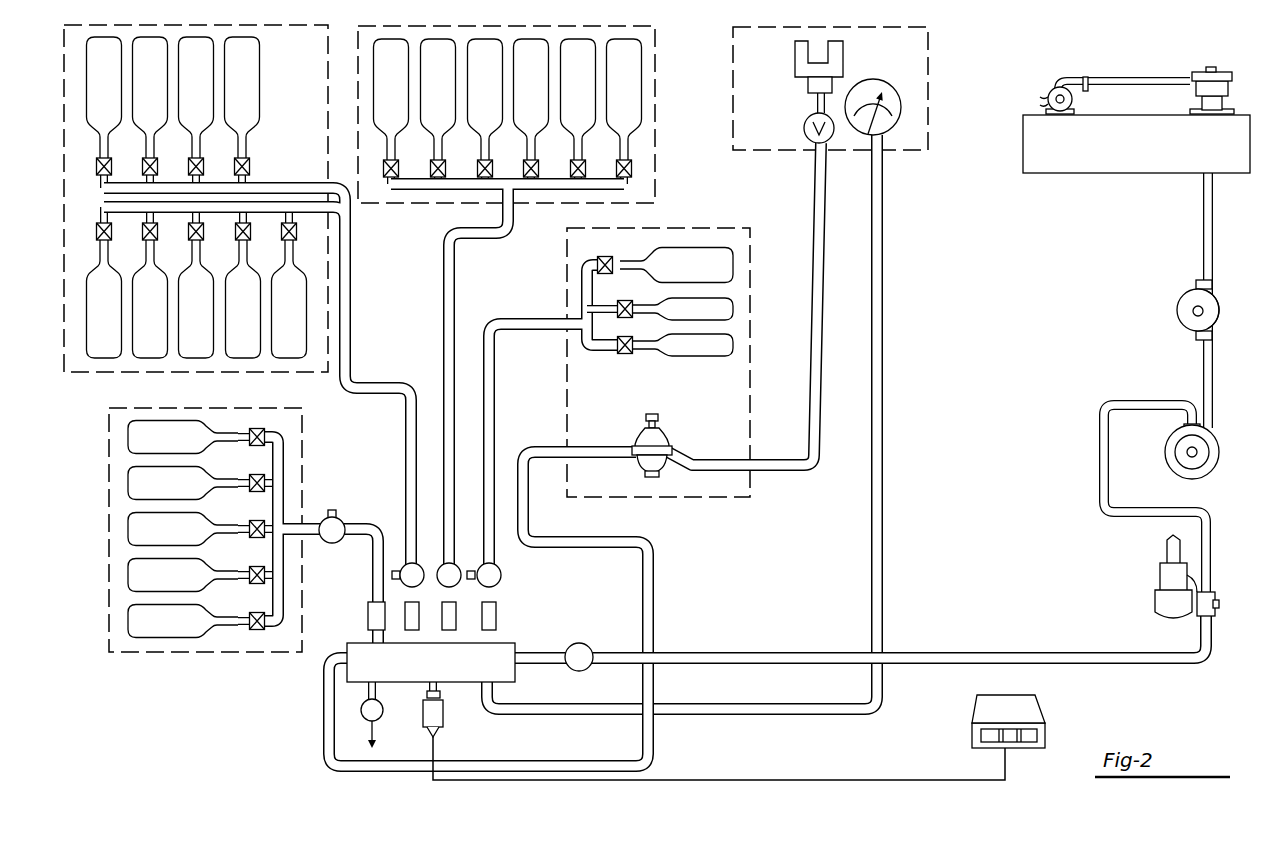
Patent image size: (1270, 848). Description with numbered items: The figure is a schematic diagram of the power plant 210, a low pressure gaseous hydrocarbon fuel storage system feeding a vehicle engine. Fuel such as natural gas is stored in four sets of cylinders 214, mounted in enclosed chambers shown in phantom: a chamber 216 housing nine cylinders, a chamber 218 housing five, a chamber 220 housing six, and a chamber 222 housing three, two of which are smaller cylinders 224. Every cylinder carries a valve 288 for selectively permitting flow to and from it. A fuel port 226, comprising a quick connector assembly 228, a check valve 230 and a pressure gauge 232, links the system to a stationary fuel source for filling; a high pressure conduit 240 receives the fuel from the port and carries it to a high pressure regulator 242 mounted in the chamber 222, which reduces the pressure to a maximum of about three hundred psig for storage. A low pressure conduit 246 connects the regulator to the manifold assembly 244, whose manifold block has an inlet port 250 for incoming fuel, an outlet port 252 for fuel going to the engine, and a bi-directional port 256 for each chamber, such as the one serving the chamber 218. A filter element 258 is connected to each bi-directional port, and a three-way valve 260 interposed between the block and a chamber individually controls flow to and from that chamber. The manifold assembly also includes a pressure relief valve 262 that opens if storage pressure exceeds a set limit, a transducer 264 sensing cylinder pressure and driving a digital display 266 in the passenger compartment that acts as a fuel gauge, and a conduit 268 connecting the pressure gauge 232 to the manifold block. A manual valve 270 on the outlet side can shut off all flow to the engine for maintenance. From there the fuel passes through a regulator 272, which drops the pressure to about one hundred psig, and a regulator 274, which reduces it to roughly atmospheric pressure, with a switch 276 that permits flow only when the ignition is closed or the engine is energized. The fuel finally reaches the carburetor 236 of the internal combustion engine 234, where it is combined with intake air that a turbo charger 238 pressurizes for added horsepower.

The power plant 210 is at (1258, 350).
The cylinders 214 is at (252, 110).
The chamber 216 is at (318, 69).
The chamber 218 is at (110, 500).
The chamber 220 is at (655, 66).
The chamber 222 is at (750, 233).
The cylinders 224 is at (675, 348).
The fuel port 226 is at (930, 66).
The quick connector assembly 228 is at (795, 57).
The check valve 230 is at (803, 128).
The pressure gauge 232 is at (915, 50).
The internal combustion engine 234 is at (1070, 165).
The carburetor 236 is at (1255, 50).
The turbo charger 238 is at (1067, 86).
The high pressure conduit 240 is at (811, 376).
The high pressure regulator 242 is at (668, 440).
The manifold assembly 244 is at (312, 729).
The low pressure conduit 246 is at (655, 584).
The inlet port 250 is at (346, 665).
The outlet port 252 is at (503, 668).
The bi-directional port 256 is at (372, 648).
The filter element 258 is at (496, 612).
The three-way valve 260 is at (338, 517).
The pressure relief valve 262 is at (383, 708).
The transducer 264 is at (441, 705).
The digital display 266 is at (978, 710).
The conduit 268 is at (882, 432).
The manual valve 270 is at (583, 642).
The regulator 272 is at (1165, 570).
The regulator 274 is at (1185, 316).
The switch 276 is at (1180, 468).
The valve 288 is at (252, 168).